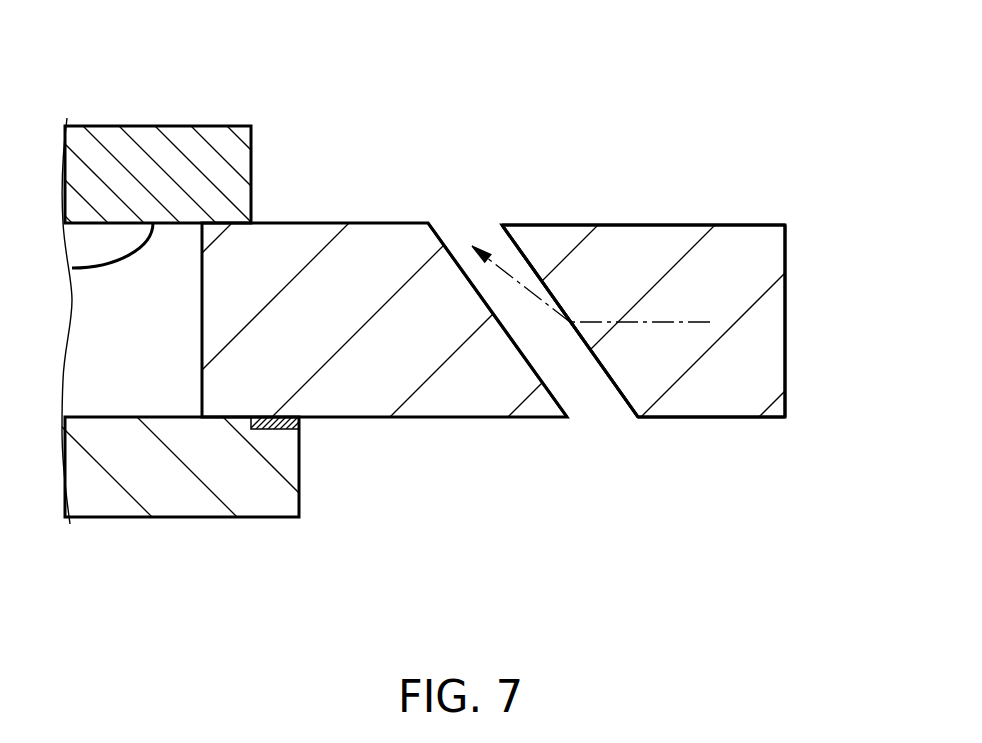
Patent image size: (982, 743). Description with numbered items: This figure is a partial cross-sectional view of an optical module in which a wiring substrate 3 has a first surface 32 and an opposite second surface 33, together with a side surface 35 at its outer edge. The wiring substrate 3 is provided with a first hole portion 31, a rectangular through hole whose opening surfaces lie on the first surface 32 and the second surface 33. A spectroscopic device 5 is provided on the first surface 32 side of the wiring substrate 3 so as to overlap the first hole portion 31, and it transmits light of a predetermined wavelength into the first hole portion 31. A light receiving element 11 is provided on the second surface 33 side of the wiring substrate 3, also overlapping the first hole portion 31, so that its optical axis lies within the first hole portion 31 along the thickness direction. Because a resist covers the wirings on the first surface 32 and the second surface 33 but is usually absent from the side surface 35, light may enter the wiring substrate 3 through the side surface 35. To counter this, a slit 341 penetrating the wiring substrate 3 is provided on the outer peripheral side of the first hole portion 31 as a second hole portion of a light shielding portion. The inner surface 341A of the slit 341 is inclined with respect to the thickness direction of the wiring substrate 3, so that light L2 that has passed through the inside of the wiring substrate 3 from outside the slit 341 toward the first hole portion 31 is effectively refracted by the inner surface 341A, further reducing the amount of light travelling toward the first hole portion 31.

The light receiving element 11 is at (148, 140).
The spectroscopic device 5 is at (167, 500).
The first hole portion 31 is at (153, 302).
The wiring substrate 3 is at (650, 237).
The second surface 33 is at (740, 222).
The side surface 35 is at (786, 346).
The first surface 32 is at (733, 419).
The slit 341 is at (590, 450).
The inner surface 341A is at (615, 397).
The light L2 is at (683, 322).